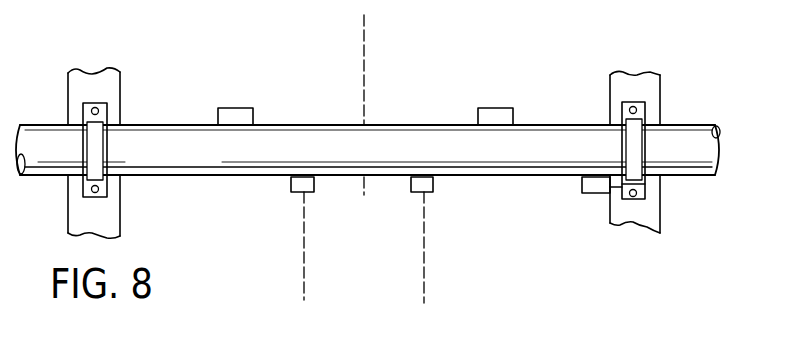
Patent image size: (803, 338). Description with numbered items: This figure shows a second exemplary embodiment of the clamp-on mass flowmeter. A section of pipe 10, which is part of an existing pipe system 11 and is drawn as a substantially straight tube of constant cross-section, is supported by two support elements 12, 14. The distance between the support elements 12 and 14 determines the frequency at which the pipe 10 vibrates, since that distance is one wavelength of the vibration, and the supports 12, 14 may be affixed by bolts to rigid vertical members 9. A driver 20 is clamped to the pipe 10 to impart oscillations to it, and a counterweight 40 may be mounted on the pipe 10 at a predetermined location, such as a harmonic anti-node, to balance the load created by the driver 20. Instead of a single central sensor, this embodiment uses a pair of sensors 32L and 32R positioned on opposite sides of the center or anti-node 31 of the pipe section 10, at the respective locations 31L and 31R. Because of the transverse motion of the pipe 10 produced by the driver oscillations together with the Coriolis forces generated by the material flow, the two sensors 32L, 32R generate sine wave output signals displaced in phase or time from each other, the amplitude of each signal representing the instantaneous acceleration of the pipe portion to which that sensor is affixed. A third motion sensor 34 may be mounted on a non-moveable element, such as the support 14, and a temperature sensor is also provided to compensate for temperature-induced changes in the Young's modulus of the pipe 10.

The rigid vertical members 9 is at (120, 183).
The pipe 10 is at (175, 155).
The existing pipe system 11 is at (54, 153).
The support element 12 is at (100, 198).
The support element 14 is at (645, 150).
The driver 20 is at (250, 108).
The counterweight 40 is at (500, 108).
The center or anti-node 31 is at (364, 77).
The left sensor location 31L is at (304, 245).
The right sensor location 31R is at (424, 246).
The left sensor 32L is at (313, 192).
The right sensor 32R is at (427, 192).
The third motion sensor 34 is at (646, 190).